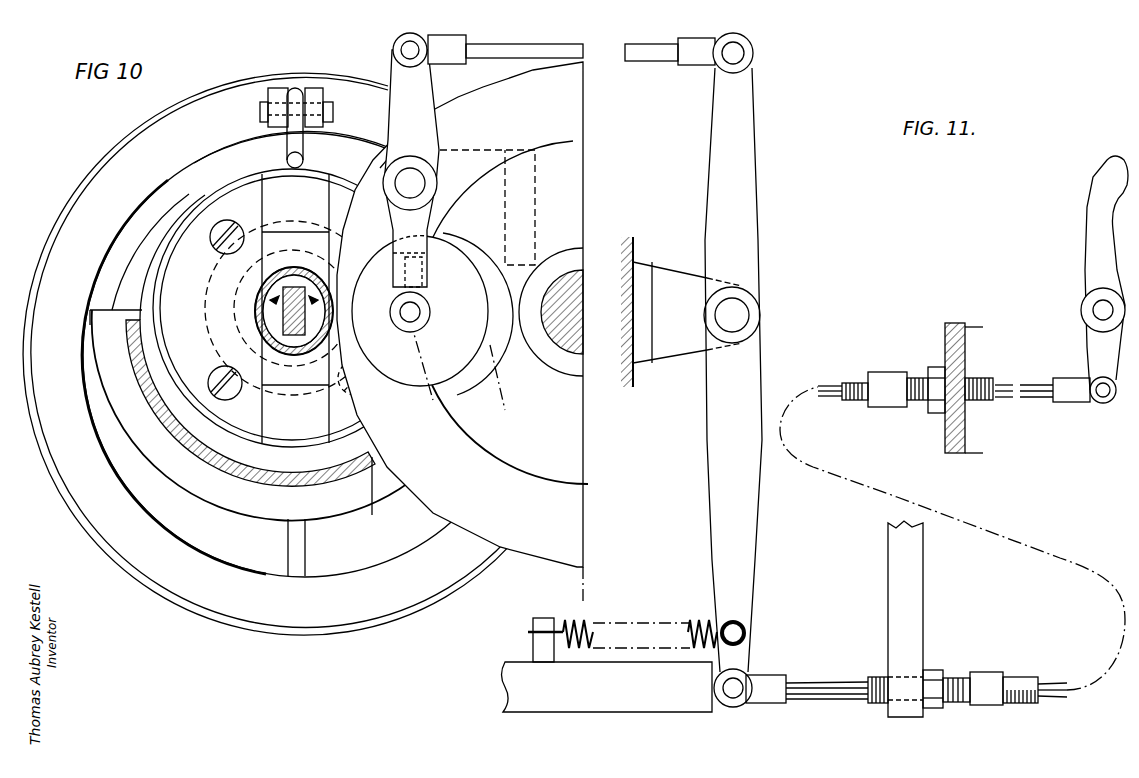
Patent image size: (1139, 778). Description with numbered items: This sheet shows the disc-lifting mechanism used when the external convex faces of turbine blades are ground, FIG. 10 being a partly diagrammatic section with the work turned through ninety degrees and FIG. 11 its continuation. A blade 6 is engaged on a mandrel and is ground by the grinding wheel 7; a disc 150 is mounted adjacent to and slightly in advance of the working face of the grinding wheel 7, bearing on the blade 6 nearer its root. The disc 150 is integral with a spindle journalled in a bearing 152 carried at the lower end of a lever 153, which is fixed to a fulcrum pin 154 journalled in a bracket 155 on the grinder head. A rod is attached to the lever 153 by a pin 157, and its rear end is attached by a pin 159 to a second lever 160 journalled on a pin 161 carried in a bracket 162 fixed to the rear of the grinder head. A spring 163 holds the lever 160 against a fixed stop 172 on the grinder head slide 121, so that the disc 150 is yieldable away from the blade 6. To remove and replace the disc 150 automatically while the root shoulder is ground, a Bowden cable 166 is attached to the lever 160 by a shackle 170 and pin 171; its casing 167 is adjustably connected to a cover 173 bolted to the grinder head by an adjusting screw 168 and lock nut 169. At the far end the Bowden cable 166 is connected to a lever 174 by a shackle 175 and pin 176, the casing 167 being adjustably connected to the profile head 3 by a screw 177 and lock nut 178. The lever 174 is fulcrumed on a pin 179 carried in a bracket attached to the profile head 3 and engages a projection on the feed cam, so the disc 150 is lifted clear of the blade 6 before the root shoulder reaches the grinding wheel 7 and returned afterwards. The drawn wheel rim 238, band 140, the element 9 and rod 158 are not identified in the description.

In FIG. 10, the wheel rim 238 is at (125, 135).
In FIG. 10, the brake band 140 is at (240, 472).
In FIG. 10, the hub flange 9 is at (212, 276).
In FIG. 10, the blade 6 is at (255, 317).
In FIG. 10, the grinding wheel 7 is at (533, 530).
In FIG. 10, the disc 150 is at (440, 381).
In FIG. 10, the bearing 152 is at (406, 325).
In FIG. 10, the lever 153 is at (420, 91).
In FIG. 10, the fulcrum pin 154 is at (410, 183).
In FIG. 10, the bracket 155 is at (454, 176).
In FIG. 10, the pin 157 is at (410, 312).
In FIG. 10, the connecting rod 158 is at (550, 52).
In FIG. 10, the pin 159 is at (737, 53).
In FIG. 10, the lever 160 is at (740, 183).
In FIG. 10, the pin 161 is at (735, 315).
In FIG. 10, the bracket 162 is at (643, 337).
In FIG. 10, the spring 163 is at (577, 620).
In FIG. 10, the fixed stop 172 is at (711, 686).
In FIG. 10, the pin 171 is at (736, 684).
In FIG. 10, the shackle 170 is at (773, 683).
In FIG. 10, the Bowden cable 166 is at (845, 683).
In FIG. 11, the Bowden cable 166 is at (1033, 383).
In FIG. 10, the grinder head slide 121 is at (533, 690).
In FIG. 10, the cover 173 is at (905, 542).
In FIG. 10, the lock nut 169 is at (928, 666).
In FIG. 10, the adjusting screw 168 is at (978, 680).
In FIG. 10, the casing 167 is at (1018, 680).
In FIG. 11, the lever 174 is at (1090, 220).
In FIG. 11, the pin 179 is at (1100, 307).
In FIG. 11, the pin 176 is at (1103, 400).
In FIG. 11, the shackle 175 is at (1075, 393).
In FIG. 11, the profile head 3 is at (945, 327).
In FIG. 11, the lock nut 178 is at (937, 407).
In FIG. 11, the screw 177 is at (888, 393).